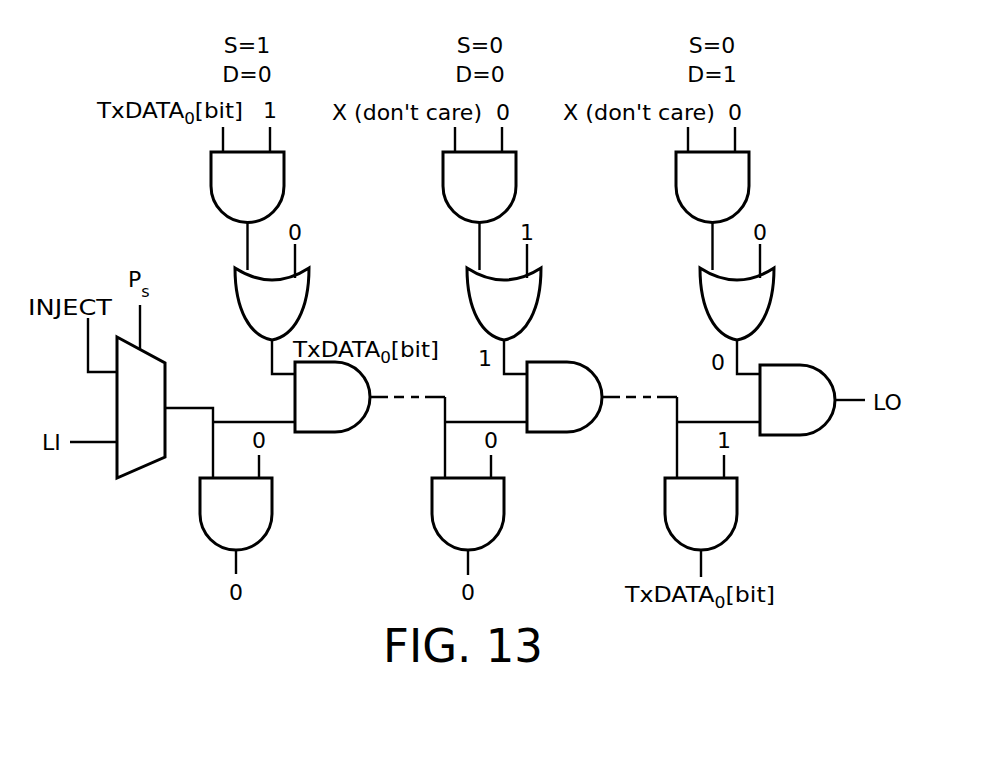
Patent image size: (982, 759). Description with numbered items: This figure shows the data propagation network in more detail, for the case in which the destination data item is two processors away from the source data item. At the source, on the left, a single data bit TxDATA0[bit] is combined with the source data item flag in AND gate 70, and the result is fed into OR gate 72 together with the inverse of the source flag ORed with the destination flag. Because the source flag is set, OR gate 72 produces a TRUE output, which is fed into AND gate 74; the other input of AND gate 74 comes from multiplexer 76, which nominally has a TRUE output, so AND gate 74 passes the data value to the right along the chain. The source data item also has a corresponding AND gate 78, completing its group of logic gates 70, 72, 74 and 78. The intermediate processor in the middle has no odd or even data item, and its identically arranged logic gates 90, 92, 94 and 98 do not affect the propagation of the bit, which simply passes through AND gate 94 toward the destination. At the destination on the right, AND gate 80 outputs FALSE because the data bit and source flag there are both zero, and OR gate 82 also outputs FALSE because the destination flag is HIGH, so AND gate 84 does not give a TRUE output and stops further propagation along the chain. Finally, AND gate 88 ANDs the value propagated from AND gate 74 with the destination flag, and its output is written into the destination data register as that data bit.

The AND gate 70 is at (213, 187).
The OR gate 72 is at (239, 304).
The AND gate 74 is at (351, 422).
The multiplexer 76 is at (141, 431).
The AND gate 78 is at (270, 514).
The AND gate 80 is at (678, 187).
The OR gate 82 is at (703, 304).
The AND gate 84 is at (797, 370).
The AND gate 88 is at (735, 514).
The AND gate 90 is at (446, 187).
The OR gate 92 is at (471, 304).
The AND gate 94 is at (564, 369).
The AND gate 98 is at (501, 514).